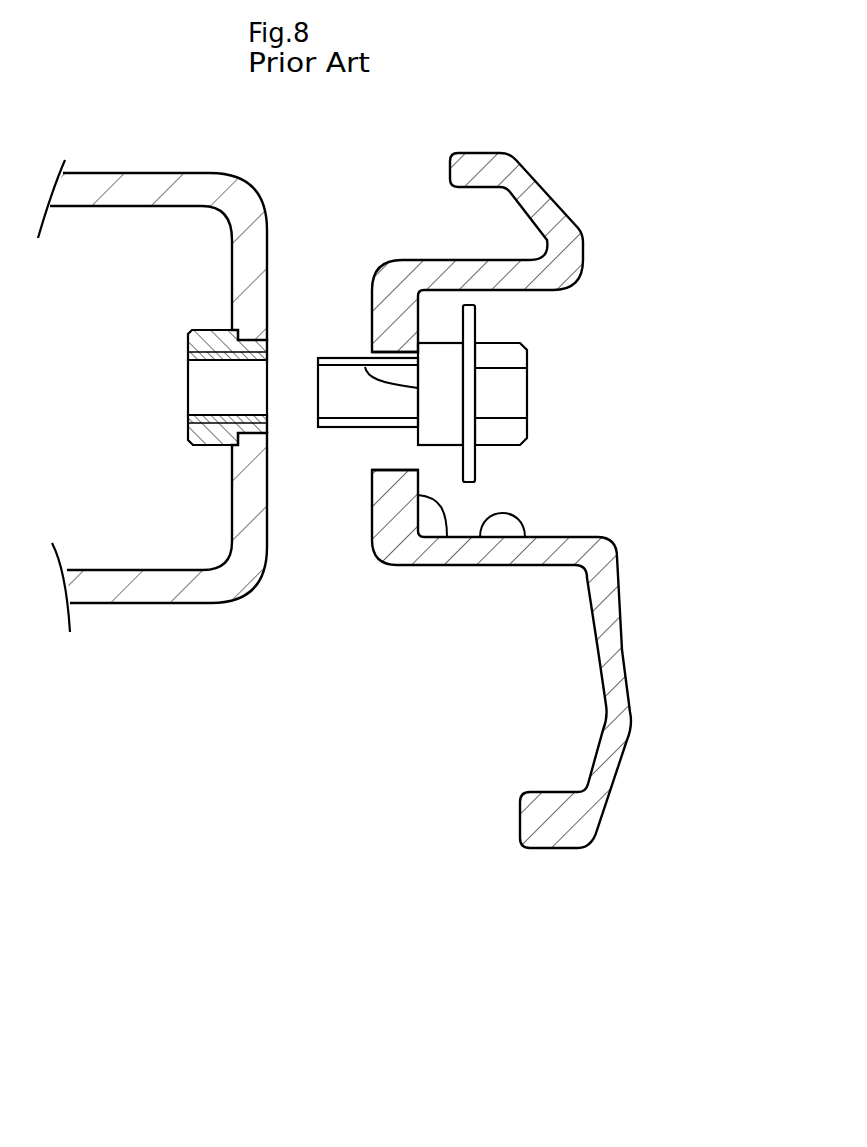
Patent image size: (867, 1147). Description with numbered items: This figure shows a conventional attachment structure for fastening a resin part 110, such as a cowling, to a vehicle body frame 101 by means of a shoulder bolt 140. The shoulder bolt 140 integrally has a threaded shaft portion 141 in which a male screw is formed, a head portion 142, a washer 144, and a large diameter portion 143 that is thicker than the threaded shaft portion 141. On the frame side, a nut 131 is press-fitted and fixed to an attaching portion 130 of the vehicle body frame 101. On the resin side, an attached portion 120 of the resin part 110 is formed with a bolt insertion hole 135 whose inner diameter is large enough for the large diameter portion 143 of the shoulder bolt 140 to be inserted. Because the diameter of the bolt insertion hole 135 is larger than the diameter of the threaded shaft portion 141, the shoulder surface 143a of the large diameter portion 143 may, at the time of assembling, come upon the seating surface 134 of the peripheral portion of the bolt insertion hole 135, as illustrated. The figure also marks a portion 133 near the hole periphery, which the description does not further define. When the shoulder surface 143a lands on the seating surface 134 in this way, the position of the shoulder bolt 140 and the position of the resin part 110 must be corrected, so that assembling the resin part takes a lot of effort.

The vehicle body frame 101 is at (118, 602).
The resin part 110 is at (545, 857).
The attached portion 120 is at (540, 492).
The attaching portion 130 is at (179, 421).
The nut 131 is at (200, 432).
The weld portion 133 is at (522, 563).
The seating surface 134 is at (448, 537).
The bolt insertion hole 135 is at (392, 470).
The shoulder bolt 140 is at (483, 342).
The threaded shaft portion 141 is at (347, 380).
The head portion 142 is at (497, 402).
The large diameter portion 143 is at (378, 324).
The shoulder surface 143a is at (365, 367).
The washer 144 is at (470, 322).